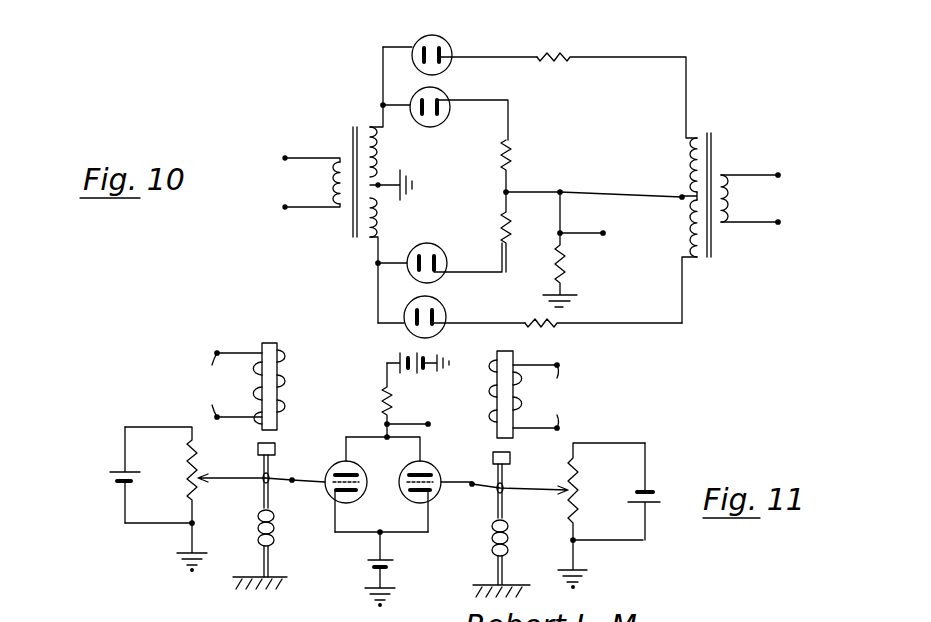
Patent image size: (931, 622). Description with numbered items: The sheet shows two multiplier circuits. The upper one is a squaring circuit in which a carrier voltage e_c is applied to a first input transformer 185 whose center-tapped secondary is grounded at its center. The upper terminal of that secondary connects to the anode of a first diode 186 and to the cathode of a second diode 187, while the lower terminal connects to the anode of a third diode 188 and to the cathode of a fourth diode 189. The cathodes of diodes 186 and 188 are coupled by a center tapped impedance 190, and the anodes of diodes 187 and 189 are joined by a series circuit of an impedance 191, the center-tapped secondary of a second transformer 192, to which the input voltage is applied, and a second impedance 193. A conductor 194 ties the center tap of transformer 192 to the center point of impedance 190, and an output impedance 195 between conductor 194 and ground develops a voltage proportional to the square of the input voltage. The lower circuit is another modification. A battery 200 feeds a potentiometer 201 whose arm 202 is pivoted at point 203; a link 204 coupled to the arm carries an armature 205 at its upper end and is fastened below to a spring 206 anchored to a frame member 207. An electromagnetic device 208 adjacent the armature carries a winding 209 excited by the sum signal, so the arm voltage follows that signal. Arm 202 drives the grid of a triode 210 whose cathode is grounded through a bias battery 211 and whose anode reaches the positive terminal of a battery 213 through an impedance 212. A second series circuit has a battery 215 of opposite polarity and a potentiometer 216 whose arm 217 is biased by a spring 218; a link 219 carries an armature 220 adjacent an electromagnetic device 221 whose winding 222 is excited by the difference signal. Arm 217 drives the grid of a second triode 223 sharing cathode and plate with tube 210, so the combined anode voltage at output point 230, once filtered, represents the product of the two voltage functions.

In FIG. 10, the first input transformer 185 is at (350, 122).
In FIG. 10, the first diode 186 is at (438, 126).
In FIG. 10, the second diode 187 is at (446, 38).
In FIG. 10, the third diode 188 is at (428, 243).
In FIG. 10, the fourth diode 189 is at (443, 303).
In FIG. 10, the center tapped impedance 190 is at (497, 132).
In FIG. 10, the impedance 191 is at (562, 55).
In FIG. 10, the second transformer 192 is at (715, 140).
In FIG. 10, the second impedance 193 is at (563, 322).
In FIG. 10, the conductor 194 is at (632, 192).
In FIG. 10, the output impedance 195 is at (565, 262).
In FIG. 11, the battery 200 is at (112, 489).
In FIG. 11, the potentiometer 201 is at (190, 470).
In FIG. 11, the variable tap or arm 202 is at (218, 481).
In FIG. 11, the pivot point 203 is at (292, 484).
In FIG. 11, the link 204 is at (271, 474).
In FIG. 11, the armature 205 is at (258, 447).
In FIG. 11, the spring 206 is at (274, 547).
In FIG. 11, the frame member 207 is at (252, 578).
In FIG. 11, the electromagnetic device 208 is at (262, 345).
In FIG. 11, the winding 209 is at (283, 363).
In FIG. 11, the triode 210 is at (350, 504).
In FIG. 11, the bias battery 211 is at (386, 568).
In FIG. 11, the impedance 212 is at (380, 397).
In FIG. 11, the battery 213 is at (395, 361).
In FIG. 11, the battery 215 is at (633, 504).
In FIG. 11, the potentiometer 216 is at (578, 468).
In FIG. 11, the variable arm 217 is at (520, 492).
In FIG. 11, the spring 218 is at (508, 553).
In FIG. 11, the link 219 is at (506, 481).
In FIG. 11, the armature 220 is at (505, 452).
In FIG. 11, the electromagnetic device 221 is at (515, 356).
In FIG. 11, the winding 222 is at (493, 386).
In FIG. 11, the second triode 223 is at (410, 462).
In FIG. 11, the output point 230 is at (436, 410).